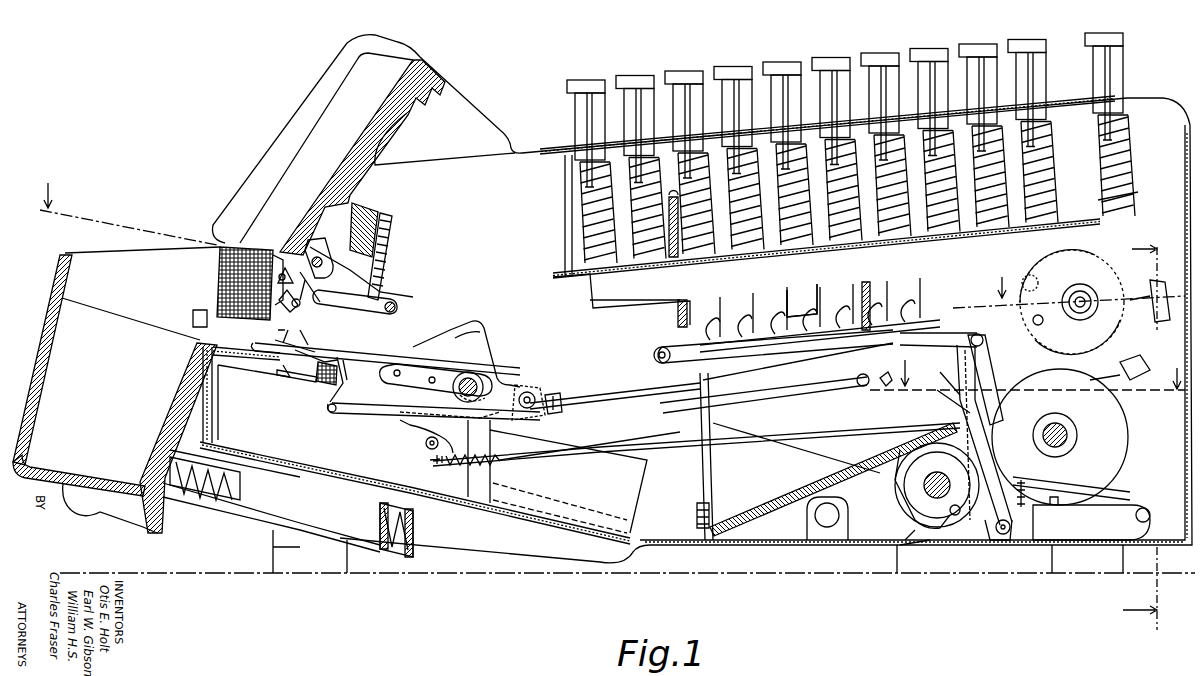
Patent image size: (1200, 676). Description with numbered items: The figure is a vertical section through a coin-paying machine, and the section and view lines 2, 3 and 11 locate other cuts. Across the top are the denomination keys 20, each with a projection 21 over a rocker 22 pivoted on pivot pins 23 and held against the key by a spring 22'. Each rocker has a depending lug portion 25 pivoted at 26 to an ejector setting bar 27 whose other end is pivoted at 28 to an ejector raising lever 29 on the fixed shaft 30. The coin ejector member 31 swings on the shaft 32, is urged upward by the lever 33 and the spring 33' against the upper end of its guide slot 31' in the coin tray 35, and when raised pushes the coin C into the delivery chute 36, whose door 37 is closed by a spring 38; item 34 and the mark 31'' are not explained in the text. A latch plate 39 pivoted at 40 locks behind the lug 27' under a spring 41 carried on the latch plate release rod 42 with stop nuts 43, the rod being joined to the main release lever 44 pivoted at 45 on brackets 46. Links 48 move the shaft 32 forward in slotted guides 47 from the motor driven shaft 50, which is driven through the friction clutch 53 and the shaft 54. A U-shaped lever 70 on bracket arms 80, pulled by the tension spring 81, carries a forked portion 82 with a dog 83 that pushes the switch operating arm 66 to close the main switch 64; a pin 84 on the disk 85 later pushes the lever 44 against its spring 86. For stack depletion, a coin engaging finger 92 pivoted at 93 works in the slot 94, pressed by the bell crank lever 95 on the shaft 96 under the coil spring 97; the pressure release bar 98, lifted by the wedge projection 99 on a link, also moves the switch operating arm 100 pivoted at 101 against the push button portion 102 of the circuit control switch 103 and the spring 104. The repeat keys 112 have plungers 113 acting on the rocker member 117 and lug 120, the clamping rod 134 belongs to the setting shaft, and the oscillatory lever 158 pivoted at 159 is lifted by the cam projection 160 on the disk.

The section line 2- 2 is at (611, 252).
The section line 3- 3 is at (1027, 367).
The section line 11- 11 is at (1140, 432).
The keys 20 is at (605, 115).
The projections 21 is at (860, 296).
The rocker 22 is at (834, 317).
The spring 22' is at (659, 313).
The pivot pins 23 is at (654, 358).
The depending lug portion 25 is at (886, 385).
The pivot 26 is at (862, 388).
The ejector setting bar 27 is at (776, 380).
The lug 27' is at (450, 404).
The pivot 28 is at (330, 413).
The ejector raising lever 29 is at (318, 385).
The fixed shaft 30 is at (343, 380).
The coin ejector member 31 is at (385, 356).
The guide slot 31' is at (295, 340).
The rod end 31'' is at (279, 333).
The shaft 32 is at (485, 390).
The lever 33 is at (316, 346).
The spring 33' is at (318, 327).
The bar 34 is at (290, 378).
The coin tray 35 is at (338, 153).
The delivery chute 36 is at (62, 343).
The door 37 is at (100, 475).
The spring 38 is at (205, 505).
The latch plate 39 is at (418, 432).
The pivot ends 40 is at (426, 448).
The spring 41 is at (487, 463).
The latch plate release rod 42 is at (652, 453).
The adjustable stop nuts 43 is at (445, 462).
The main release lever 44 is at (985, 440).
The pivot 45 is at (1004, 537).
The brackets 46 is at (988, 537).
The slotted guides 47 is at (446, 370).
The links 48 is at (608, 402).
The motor driven shaft 50 is at (937, 475).
The friction clutch 53 is at (1090, 412).
The shaft 54 is at (1078, 435).
The main switch 64 is at (1080, 525).
The switch operating arm 66 is at (1105, 480).
The U-shaped lever 70 is at (690, 370).
The bracket arms 80 is at (716, 470).
The coiled tension spring 81 is at (695, 516).
The forked portion 82 is at (972, 334).
The dog 83 is at (990, 365).
The pin 84 is at (950, 511).
The disk 85 is at (910, 520).
The spring 86 is at (745, 522).
The coin engaging finger 92 is at (294, 308).
The pivot 93 is at (318, 278).
The slot 94 is at (280, 252).
The bell crank lever 95 is at (384, 262).
The shaft 96 is at (325, 250).
The coil spring 97 is at (382, 237).
The pressure release bar 98 is at (398, 308).
The wedge projection 99 is at (465, 322).
The switch operating arm 100 is at (412, 342).
The pivot 101 is at (535, 390).
The push button portion 102 is at (565, 406).
The circuit control switch 103 is at (632, 494).
The coiled spring 104 is at (392, 280).
The repeat keys 112 is at (1122, 52).
The spring returned plunger 113 is at (1132, 198).
The rocker member 117 is at (1160, 284).
The lug 120 is at (1121, 369).
The clamping rod 134 is at (1072, 290).
The oscillatory lever 158 is at (940, 390).
The pivot 159 is at (827, 527).
The cam projection 160 is at (915, 546).
The coin C is at (205, 300).